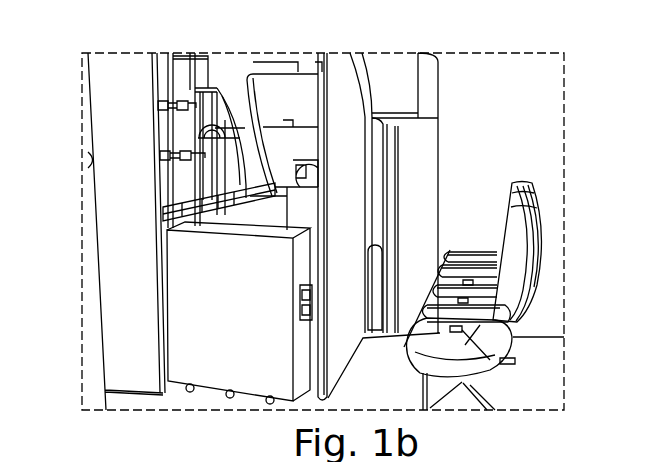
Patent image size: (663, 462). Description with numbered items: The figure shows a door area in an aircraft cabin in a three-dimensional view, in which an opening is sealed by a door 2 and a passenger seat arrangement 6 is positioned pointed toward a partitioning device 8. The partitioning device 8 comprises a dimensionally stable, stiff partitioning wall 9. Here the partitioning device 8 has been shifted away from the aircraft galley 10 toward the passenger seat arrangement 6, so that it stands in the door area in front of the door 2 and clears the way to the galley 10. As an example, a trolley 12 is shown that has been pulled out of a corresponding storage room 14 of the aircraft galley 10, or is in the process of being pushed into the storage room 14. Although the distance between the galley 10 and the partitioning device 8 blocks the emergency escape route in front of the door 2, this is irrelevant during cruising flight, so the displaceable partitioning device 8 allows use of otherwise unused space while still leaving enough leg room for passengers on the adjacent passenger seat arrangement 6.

The door 2 is at (285, 97).
The passenger seat arrangement 6 is at (547, 172).
The partitioning device 8 is at (345, 103).
The partitioning wall 9 is at (356, 220).
The aircraft galley 10 is at (173, 128).
The trolley 12 is at (249, 326).
The storage room 14 is at (170, 214).